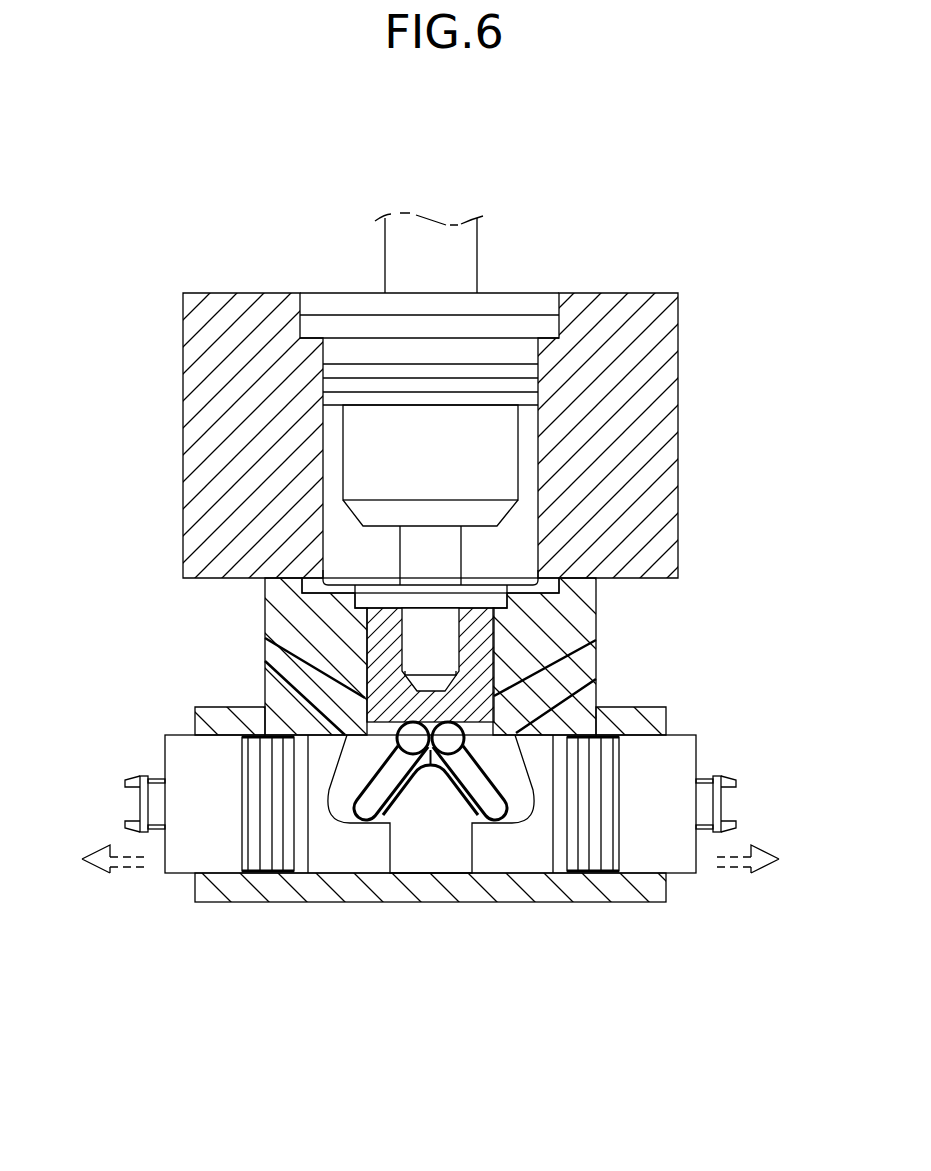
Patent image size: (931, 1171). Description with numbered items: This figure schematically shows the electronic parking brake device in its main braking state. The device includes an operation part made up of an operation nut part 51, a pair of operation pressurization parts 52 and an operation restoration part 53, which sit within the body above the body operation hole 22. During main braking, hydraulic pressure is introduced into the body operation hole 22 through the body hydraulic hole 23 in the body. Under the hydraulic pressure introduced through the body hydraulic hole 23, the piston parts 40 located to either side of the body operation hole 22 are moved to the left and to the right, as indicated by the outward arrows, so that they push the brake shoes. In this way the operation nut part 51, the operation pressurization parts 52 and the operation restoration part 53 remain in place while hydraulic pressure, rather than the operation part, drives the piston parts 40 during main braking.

The body operation hole 22 is at (443, 852).
The body hydraulic hole 23 is at (312, 698).
The piston parts 40 is at (680, 752).
The operation nut part 51 is at (477, 668).
The operation pressurization parts 52 is at (371, 805).
The operation restoration part 53 is at (432, 772).